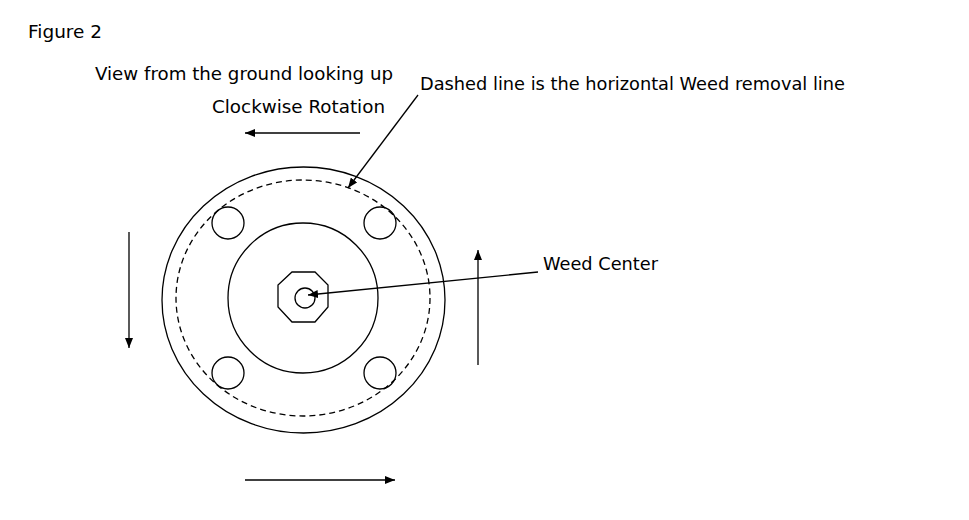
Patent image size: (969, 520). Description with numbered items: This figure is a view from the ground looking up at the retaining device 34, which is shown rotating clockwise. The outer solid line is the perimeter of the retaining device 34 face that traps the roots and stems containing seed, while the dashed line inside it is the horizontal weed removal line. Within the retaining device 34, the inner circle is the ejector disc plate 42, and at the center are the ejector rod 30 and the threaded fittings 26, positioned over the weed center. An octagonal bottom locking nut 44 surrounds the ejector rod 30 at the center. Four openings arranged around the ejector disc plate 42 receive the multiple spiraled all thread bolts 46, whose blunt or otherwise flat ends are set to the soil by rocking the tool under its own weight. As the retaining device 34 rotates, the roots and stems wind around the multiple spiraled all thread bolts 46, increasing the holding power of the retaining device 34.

The retaining device 34 is at (213, 186).
The ejector rod 30 is at (311, 298).
The threaded fittings 26 is at (316, 307).
The ejector disc plate 42 is at (356, 326).
The multiple spiraled all thread bolts 46 is at (236, 233).
The bottom locking nut 44 is at (294, 316).